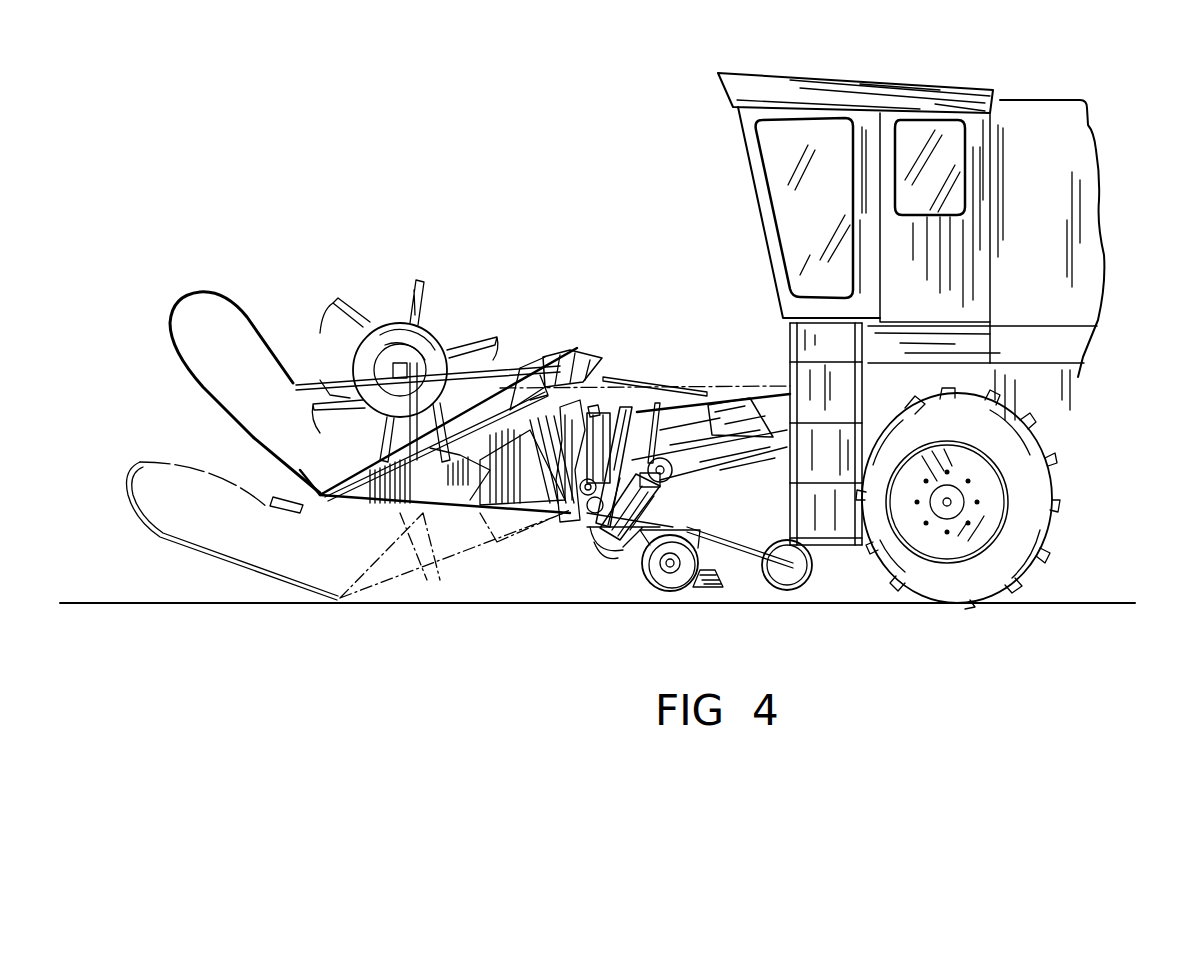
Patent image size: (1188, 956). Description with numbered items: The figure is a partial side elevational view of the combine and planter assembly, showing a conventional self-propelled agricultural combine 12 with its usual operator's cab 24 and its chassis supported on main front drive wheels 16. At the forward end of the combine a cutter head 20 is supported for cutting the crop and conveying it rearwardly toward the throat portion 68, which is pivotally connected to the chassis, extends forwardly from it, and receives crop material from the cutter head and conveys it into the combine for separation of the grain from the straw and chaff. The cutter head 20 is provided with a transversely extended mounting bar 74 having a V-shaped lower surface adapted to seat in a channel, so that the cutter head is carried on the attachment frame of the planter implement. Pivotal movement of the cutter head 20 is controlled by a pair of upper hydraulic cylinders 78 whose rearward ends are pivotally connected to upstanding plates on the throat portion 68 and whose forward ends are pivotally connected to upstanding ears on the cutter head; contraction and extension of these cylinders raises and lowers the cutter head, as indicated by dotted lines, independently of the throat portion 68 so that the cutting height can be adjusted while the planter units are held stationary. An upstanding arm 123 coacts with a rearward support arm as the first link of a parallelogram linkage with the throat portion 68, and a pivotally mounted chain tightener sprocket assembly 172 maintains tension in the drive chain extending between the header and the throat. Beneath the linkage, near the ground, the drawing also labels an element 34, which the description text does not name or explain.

The combine 12 is at (1097, 102).
The operator's cab 24 is at (753, 152).
The main front drive wheels 16 is at (1040, 550).
The cutter head 20 is at (580, 348).
The mounting bar 74 is at (596, 411).
The upper hydraulic cylinders 78 is at (658, 383).
The throat portion 68 is at (702, 413).
The chain tightener sprocket assembly 172 is at (664, 503).
The upstanding arm 123 is at (687, 448).
The gauge wheel 34 is at (692, 602).